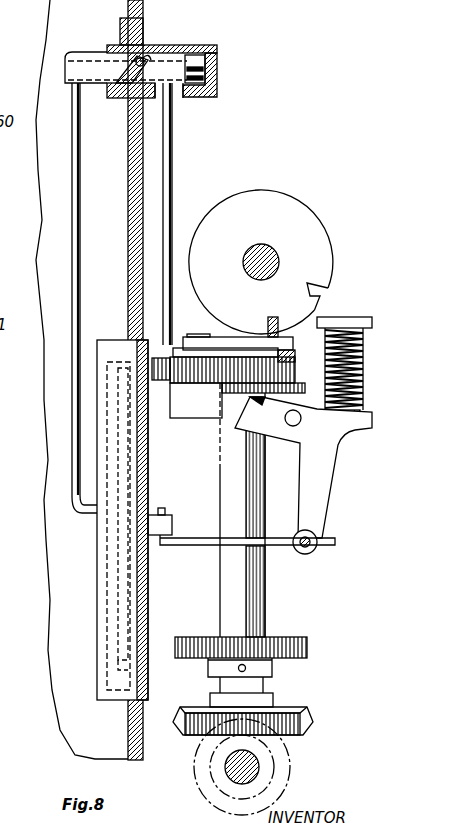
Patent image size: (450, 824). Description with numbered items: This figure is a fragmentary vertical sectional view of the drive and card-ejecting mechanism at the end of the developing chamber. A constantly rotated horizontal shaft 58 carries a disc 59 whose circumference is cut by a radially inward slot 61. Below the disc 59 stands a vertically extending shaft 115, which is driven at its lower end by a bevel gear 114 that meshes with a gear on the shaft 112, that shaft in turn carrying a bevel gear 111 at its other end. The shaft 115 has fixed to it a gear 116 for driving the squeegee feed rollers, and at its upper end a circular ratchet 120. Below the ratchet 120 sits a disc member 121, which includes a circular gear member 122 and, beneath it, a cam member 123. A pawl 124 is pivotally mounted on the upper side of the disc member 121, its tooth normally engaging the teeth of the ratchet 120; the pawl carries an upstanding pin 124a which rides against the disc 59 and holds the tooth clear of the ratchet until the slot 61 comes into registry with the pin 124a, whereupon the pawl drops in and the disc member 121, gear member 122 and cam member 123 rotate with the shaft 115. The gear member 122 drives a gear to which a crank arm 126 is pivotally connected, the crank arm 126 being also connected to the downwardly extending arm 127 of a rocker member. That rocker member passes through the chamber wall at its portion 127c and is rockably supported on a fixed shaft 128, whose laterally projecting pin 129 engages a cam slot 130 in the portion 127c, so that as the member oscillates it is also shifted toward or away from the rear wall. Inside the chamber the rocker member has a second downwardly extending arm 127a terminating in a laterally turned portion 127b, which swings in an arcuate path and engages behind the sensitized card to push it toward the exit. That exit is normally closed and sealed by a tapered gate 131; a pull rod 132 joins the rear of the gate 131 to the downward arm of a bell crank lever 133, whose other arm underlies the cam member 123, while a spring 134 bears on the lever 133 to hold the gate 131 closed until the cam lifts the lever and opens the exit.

The horizontal shaft 58 is at (278, 253).
The disc 59 is at (303, 210).
The slot 61 is at (332, 292).
The bevel gear 111 is at (290, 780).
The shaft 112 is at (257, 760).
The bevel gear 114 is at (293, 712).
The vertically extending shaft 115 is at (253, 592).
The gear 116 is at (307, 645).
The circular ratchet 120 is at (225, 332).
The disc member 121 is at (300, 335).
The circular gear member 122 is at (292, 362).
The cam member 123 is at (197, 412).
The pawl 124 is at (210, 347).
The upstanding pin 124a is at (265, 327).
The crank arm 126 is at (177, 353).
The downwardly extending arm 127 is at (170, 181).
The downwardly extending arm 127a is at (77, 188).
The laterally turned portion 127b is at (100, 506).
The portion of rockable member 127c is at (92, 58).
The fixed shaft 128 is at (197, 70).
The pin 129 is at (134, 70).
The cam slot 130 is at (143, 56).
The tapered gate 131 is at (107, 672).
The pull rod 132 is at (187, 537).
The bell crank lever 133 is at (323, 505).
The spring 134 is at (358, 362).